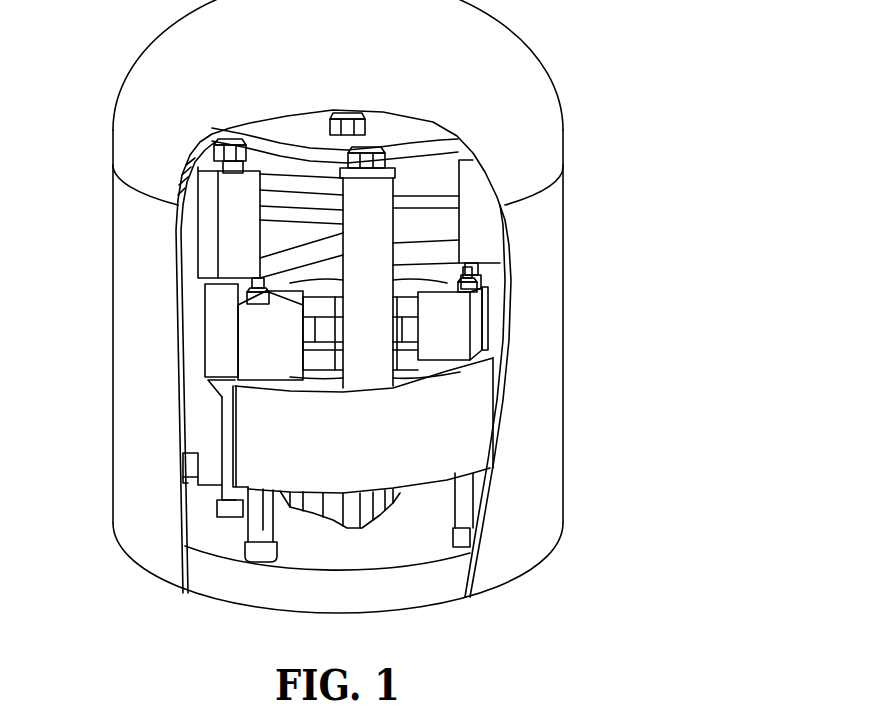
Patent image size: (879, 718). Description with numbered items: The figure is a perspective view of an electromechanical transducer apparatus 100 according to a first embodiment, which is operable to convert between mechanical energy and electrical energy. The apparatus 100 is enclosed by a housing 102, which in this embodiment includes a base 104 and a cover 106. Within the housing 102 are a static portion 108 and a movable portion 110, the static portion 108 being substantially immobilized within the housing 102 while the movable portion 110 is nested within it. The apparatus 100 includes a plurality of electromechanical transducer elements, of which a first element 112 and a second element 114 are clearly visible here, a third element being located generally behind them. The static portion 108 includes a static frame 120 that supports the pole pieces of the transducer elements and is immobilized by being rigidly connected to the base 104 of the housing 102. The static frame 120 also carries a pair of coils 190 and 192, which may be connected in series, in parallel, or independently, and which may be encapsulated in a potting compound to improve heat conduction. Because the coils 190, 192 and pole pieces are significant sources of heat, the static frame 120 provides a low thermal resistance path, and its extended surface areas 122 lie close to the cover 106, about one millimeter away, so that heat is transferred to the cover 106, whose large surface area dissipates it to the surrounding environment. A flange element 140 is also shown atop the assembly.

The electromechanical transducer apparatus 100 is at (104, 44).
The housing 102 is at (160, 600).
The base 104 is at (212, 587).
The cover 106 is at (133, 498).
The static portion 108 is at (285, 347).
The movable portion 110 is at (478, 233).
The first electromechanical transducer element 112 is at (215, 322).
The second electromechanical transducer element 114 is at (498, 300).
The static frame 120 is at (431, 478).
The extended surface areas 122 is at (418, 452).
The flange 140 is at (470, 193).
The coil 190 is at (245, 298).
The coil 192 is at (343, 360).